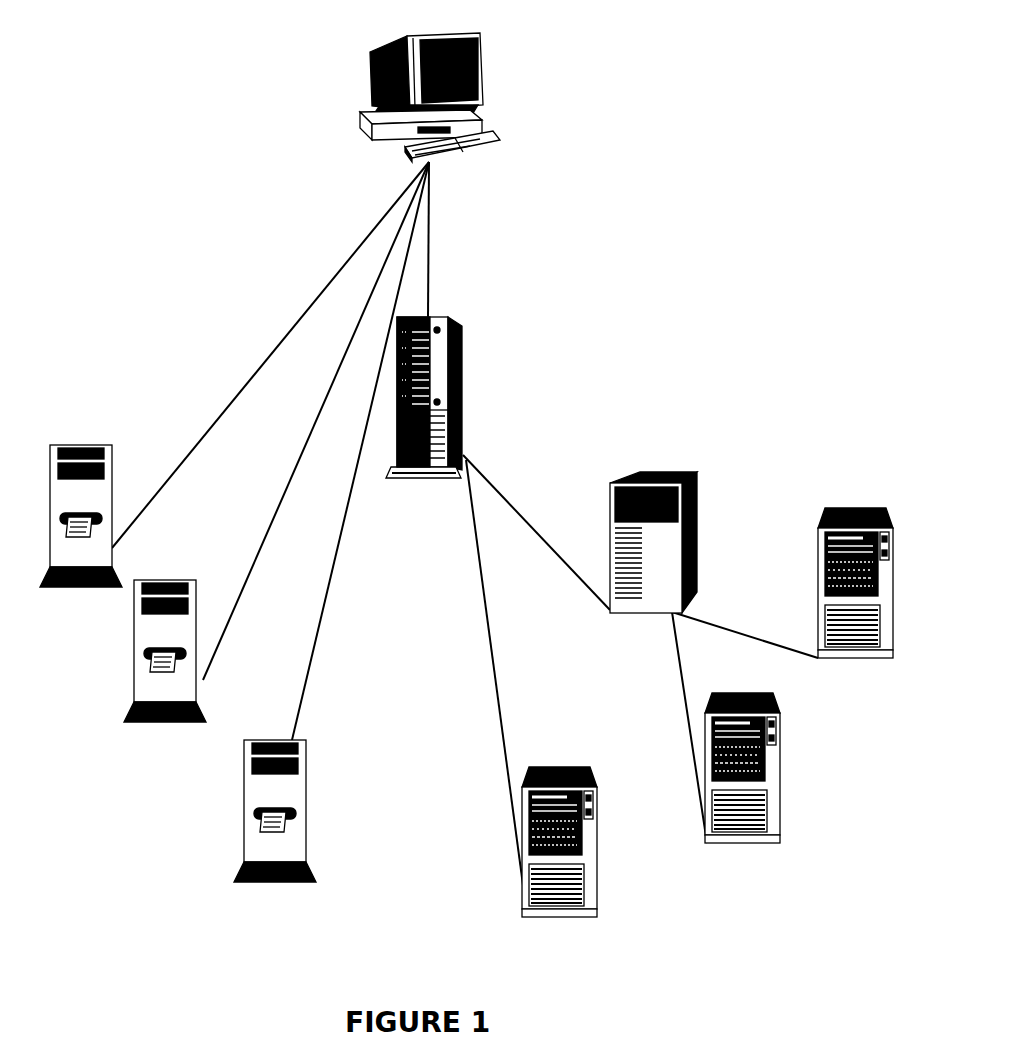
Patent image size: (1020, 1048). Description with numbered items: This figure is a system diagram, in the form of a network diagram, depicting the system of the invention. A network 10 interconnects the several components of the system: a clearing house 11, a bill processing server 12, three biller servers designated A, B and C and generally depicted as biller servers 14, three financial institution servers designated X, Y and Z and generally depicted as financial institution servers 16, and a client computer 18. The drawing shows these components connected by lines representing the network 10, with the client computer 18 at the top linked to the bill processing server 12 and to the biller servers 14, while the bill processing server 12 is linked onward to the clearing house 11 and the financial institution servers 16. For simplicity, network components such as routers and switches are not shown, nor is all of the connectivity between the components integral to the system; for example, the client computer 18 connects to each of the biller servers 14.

The network 10 is at (705, 220).
The clearing house 11 is at (698, 506).
The bill processing server 12 is at (463, 368).
The biller servers 14 is at (68, 658).
The financial institution servers 16 is at (838, 762).
The client computer 18 is at (370, 62).